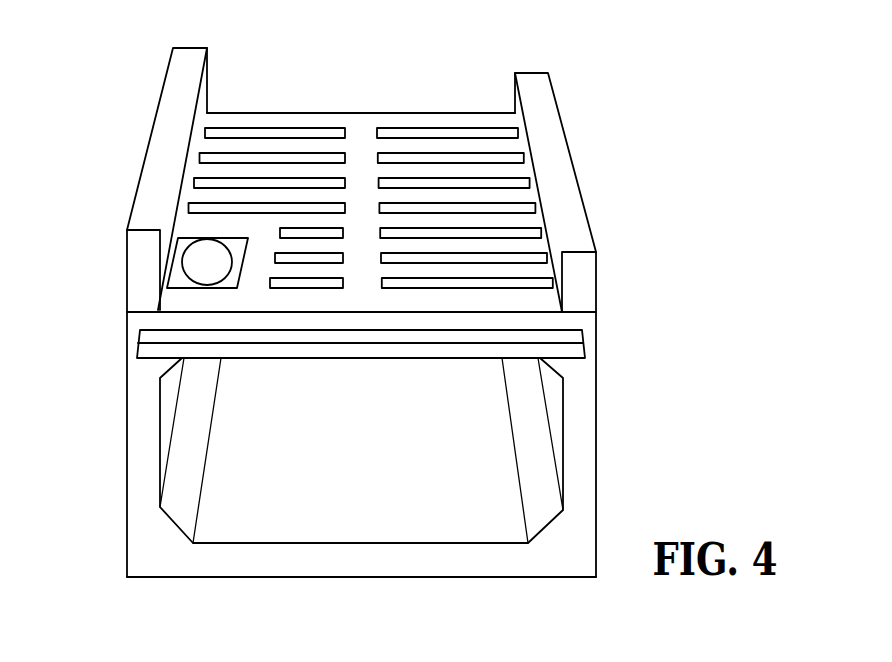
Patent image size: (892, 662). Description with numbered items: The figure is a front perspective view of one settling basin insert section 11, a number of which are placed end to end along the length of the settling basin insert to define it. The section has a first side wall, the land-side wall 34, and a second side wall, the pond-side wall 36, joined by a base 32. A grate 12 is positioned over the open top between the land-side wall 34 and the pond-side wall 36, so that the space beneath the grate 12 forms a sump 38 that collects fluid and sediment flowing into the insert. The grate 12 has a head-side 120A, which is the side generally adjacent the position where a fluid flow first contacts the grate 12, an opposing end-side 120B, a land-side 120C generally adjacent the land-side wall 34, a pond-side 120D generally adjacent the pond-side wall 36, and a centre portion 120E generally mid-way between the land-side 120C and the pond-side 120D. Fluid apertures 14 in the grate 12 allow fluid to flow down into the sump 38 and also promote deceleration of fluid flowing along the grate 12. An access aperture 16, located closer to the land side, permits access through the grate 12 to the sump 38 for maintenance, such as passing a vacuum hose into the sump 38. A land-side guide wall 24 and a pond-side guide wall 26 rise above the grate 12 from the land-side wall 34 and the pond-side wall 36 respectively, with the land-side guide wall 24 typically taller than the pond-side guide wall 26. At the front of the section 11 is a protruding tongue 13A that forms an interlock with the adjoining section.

The settling basin insert section 11 is at (656, 329).
The grate 12 is at (420, 118).
The protruding tongue 13A is at (158, 337).
The fluid apertures 14 is at (332, 128).
The access aperture 16 is at (215, 250).
The land-side guide wall 24 is at (178, 83).
The pond-side guide wall 26 is at (542, 95).
The base 32 is at (350, 557).
The land-side wall 34 is at (148, 462).
The pond-side wall 36 is at (585, 462).
The sump 38 is at (460, 457).
The head-side 120A is at (408, 298).
The end-side 120B is at (475, 120).
The land-side 120C is at (200, 172).
The pond-side 120D is at (530, 195).
The centre portion 120E is at (362, 157).